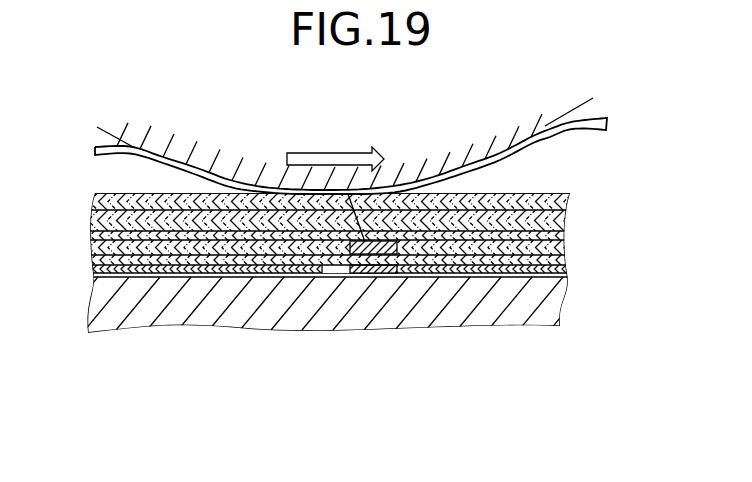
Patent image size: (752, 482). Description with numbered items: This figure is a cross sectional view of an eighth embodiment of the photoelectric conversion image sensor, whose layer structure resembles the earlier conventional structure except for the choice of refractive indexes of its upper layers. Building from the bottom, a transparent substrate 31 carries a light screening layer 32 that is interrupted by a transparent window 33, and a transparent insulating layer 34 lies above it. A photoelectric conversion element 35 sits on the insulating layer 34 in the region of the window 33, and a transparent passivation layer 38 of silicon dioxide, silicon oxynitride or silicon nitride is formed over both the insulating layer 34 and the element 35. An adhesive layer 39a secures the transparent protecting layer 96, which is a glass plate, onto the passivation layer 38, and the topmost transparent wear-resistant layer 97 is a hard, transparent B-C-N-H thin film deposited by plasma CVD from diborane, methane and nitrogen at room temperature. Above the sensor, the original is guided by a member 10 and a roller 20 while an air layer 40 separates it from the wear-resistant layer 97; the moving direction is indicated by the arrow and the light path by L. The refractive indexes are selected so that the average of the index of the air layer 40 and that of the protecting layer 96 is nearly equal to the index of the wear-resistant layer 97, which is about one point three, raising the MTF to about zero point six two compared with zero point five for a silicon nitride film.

The pressing member 10 is at (97, 127).
The roller 20 is at (590, 131).
The air layer 40 is at (508, 180).
The transparent wear-resistant layer 97 is at (566, 201).
The transparent protecting layer 96 is at (563, 218).
The layer 39a is at (558, 233).
The transparent passivation layer 38 is at (562, 246).
The transparent insulating layer 34 is at (565, 260).
The light screening layer 32 is at (562, 270).
The transparent substrate 31 is at (560, 312).
The transparent window 33 is at (348, 194).
The photoelectric conversion element 35 is at (397, 262).
The light beam L is at (348, 194).